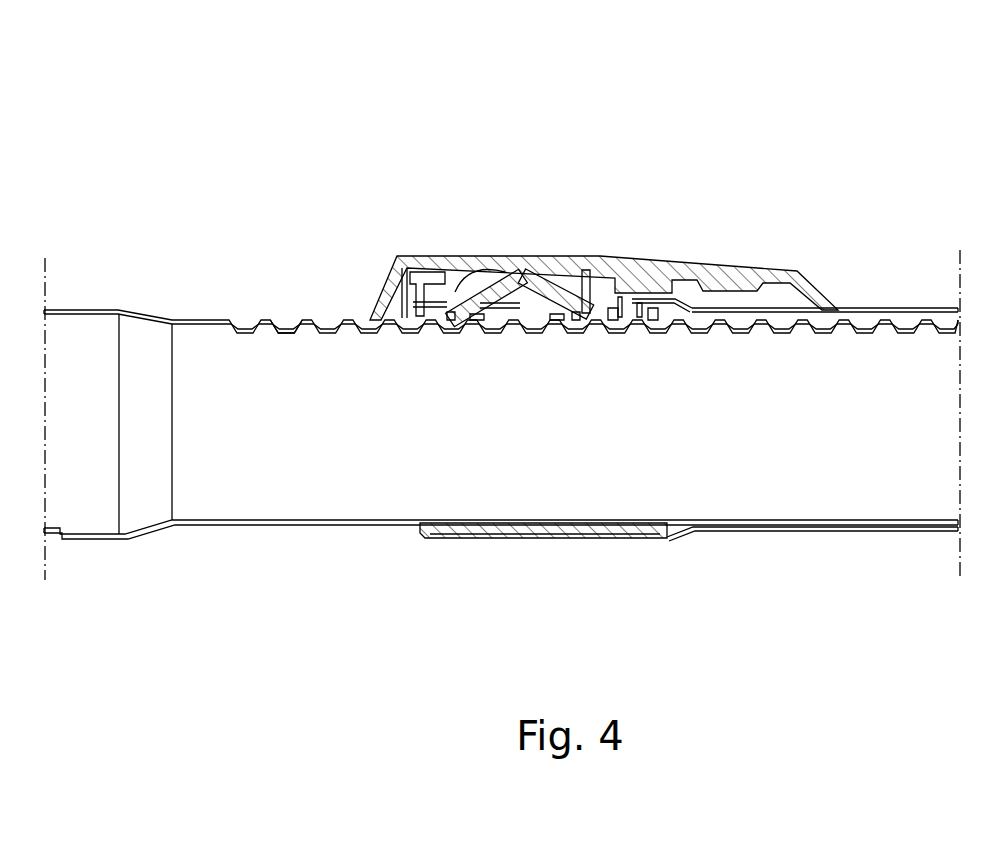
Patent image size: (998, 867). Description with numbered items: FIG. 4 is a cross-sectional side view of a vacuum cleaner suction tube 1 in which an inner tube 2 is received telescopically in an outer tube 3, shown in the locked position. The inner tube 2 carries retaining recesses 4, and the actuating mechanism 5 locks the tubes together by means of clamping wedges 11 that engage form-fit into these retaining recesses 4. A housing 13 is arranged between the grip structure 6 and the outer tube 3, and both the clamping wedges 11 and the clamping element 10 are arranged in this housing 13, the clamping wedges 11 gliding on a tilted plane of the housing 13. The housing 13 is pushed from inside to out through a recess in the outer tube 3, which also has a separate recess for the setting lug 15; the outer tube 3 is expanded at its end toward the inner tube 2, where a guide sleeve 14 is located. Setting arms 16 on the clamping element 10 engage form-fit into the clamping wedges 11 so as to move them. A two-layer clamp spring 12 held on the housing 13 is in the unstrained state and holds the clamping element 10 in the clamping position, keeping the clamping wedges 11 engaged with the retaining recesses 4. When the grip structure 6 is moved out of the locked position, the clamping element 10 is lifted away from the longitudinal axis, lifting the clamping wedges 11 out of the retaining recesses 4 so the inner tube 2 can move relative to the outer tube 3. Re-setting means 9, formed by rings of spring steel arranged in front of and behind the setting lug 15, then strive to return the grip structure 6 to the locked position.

The vacuum cleaner suction tube 1 is at (828, 172).
The inner tube 2 is at (203, 320).
The outer tube 3 is at (898, 307).
The retaining recesses 4 is at (288, 325).
The actuating mechanism 5 is at (482, 215).
The grip structure 6 is at (527, 280).
The re-setting means 9 is at (613, 320).
The clamping element 10 is at (517, 320).
The clamping wedges 11 is at (450, 320).
The clamp spring 12 is at (490, 270).
The housing 13 is at (447, 300).
The guide sleeve 14 is at (500, 540).
The setting lug 15 is at (633, 303).
The setting arms 16 is at (477, 322).